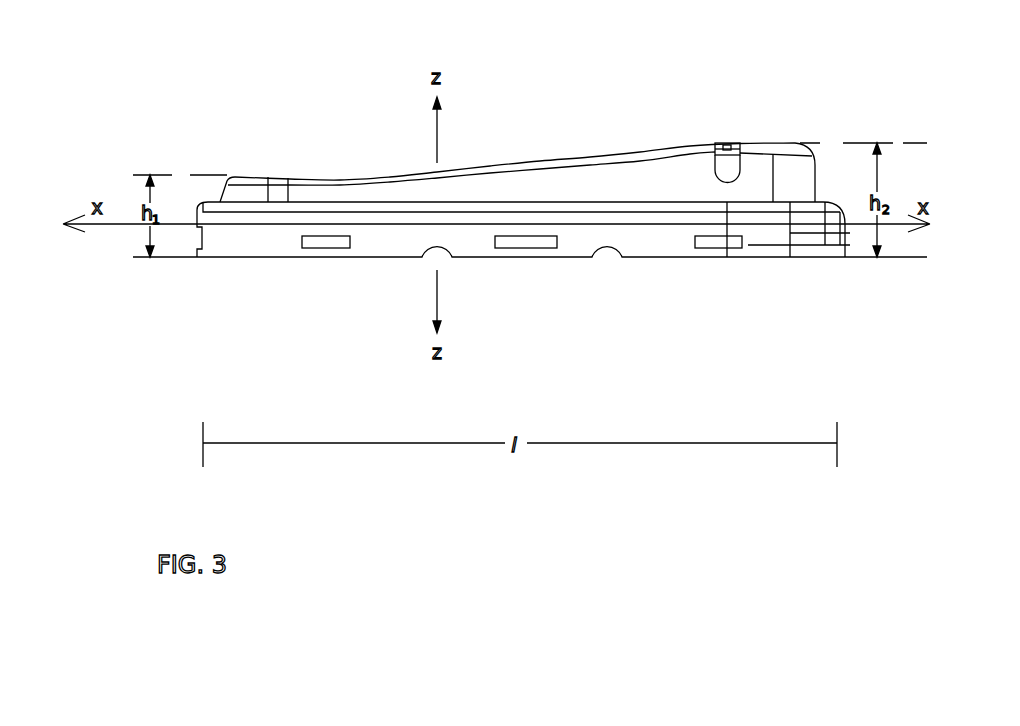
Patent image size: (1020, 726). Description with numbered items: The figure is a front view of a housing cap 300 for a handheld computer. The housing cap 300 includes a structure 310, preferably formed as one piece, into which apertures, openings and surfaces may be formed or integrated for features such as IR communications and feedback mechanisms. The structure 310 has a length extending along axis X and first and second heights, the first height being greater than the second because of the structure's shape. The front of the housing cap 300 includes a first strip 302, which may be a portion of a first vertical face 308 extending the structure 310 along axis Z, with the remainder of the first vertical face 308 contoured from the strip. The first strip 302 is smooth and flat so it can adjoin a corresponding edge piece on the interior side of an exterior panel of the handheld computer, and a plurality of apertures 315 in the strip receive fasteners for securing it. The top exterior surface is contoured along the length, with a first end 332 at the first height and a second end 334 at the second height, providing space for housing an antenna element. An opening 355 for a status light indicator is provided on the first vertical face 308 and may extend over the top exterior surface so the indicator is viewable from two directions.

The housing cap 300 is at (508, 117).
The first strip 302 is at (523, 265).
The first vertical face 308 is at (368, 189).
The structure 310 is at (560, 150).
The apertures 315 is at (312, 241).
The first end of top exterior surface 332 is at (268, 177).
The second end of top exterior surface 334 is at (735, 143).
The opening for status light indicator 355 is at (720, 167).